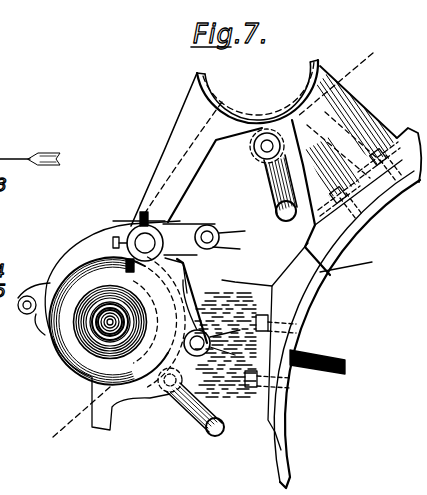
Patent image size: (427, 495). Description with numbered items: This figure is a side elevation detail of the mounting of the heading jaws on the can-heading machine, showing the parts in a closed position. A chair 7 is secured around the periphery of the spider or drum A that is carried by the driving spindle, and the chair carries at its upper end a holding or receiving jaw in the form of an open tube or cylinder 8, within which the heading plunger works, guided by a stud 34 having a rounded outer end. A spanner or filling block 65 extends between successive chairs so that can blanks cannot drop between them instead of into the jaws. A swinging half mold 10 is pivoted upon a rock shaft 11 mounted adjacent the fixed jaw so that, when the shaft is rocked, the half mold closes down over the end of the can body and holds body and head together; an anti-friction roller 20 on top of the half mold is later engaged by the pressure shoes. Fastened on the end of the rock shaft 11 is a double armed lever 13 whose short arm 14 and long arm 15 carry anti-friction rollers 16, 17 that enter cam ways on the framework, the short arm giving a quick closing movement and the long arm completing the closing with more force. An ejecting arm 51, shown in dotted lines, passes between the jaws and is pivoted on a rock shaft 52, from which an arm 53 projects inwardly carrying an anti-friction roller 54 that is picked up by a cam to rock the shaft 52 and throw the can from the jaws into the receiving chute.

The chair 7 is at (340, 103).
The tube or cylinder 8 is at (316, 72).
The swinging half mold 10 is at (107, 240).
The rock shaft 11 is at (146, 243).
The double armed lever 13 is at (138, 224).
The short arm 14 is at (217, 239).
The long arm 15 is at (222, 266).
The anti-friction roller 16 is at (134, 251).
The anti-friction roller 17 is at (212, 343).
The anti-friction roller 20 is at (25, 292).
The stud 34 is at (105, 324).
The ejecting arm 51 is at (223, 242).
The rock shaft 52 is at (256, 150).
The arm 53 is at (274, 182).
The anti-friction roller 54 is at (290, 221).
The spanner or filling block 65 is at (205, 127).
The spider or drum A is at (353, 264).